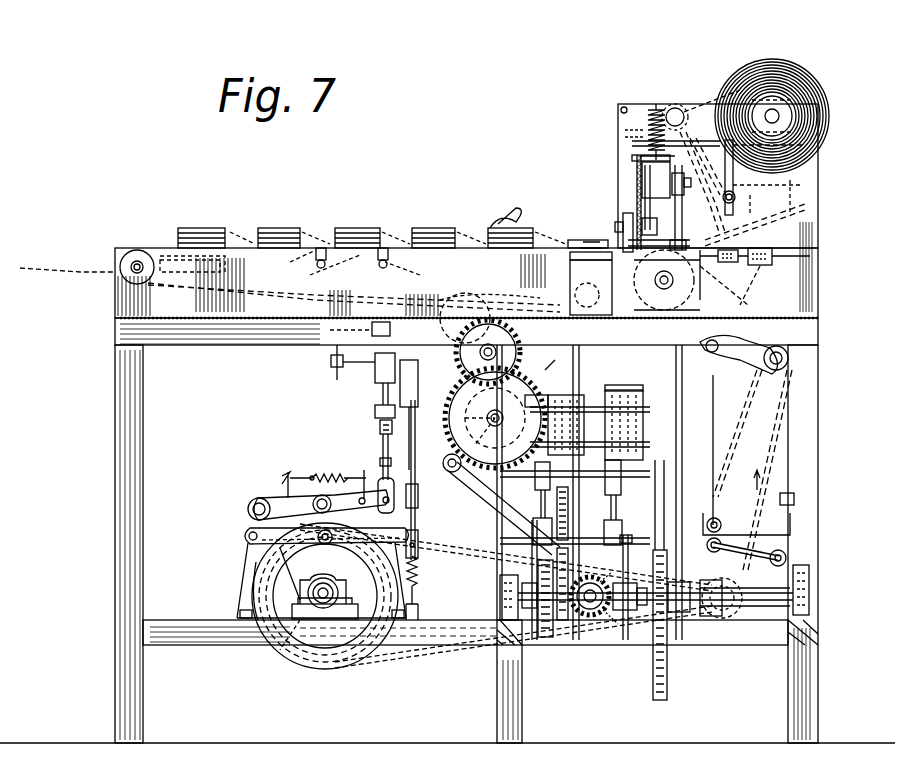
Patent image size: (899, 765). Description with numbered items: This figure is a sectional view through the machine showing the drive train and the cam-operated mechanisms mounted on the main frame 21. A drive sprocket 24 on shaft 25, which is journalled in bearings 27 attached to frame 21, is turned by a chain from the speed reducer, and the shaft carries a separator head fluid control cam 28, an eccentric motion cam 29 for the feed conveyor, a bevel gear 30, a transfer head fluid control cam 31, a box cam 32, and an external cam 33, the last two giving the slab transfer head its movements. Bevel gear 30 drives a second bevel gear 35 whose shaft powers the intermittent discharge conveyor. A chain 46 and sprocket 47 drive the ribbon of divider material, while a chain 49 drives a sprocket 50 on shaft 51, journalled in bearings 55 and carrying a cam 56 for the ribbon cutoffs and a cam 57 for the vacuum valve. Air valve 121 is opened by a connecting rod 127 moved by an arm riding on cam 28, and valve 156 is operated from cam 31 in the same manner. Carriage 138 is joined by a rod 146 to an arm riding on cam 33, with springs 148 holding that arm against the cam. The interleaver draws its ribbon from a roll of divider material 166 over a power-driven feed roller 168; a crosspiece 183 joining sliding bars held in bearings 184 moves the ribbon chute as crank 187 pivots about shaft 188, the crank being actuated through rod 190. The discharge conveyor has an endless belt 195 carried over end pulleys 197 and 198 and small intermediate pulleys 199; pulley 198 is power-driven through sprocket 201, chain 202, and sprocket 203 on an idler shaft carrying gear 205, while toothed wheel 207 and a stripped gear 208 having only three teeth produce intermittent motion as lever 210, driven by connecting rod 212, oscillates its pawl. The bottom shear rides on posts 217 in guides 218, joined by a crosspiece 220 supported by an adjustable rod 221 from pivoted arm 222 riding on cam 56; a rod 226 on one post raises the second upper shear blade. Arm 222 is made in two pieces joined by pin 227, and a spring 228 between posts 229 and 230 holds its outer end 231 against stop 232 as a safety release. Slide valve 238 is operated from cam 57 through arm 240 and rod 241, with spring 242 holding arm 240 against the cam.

The main frame 21 is at (118, 437).
The drive sprocket 24 is at (570, 622).
The shaft 25 is at (765, 610).
The bearings 27 is at (498, 598).
The separator head fluid control cam 28 is at (536, 645).
The eccentric motion cam 29 is at (553, 640).
The bevel gear 30 is at (614, 618).
The transfer head fluid control cam 31 is at (628, 645).
The box cam 32 is at (670, 695).
The external cam 33 is at (690, 645).
The second bevel gear 35 is at (588, 616).
The chain 46 is at (770, 446).
The sprocket 47 is at (732, 612).
The chain 49 is at (398, 660).
The sprocket 50 is at (318, 668).
The shaft 51 is at (275, 645).
The bearings 55 is at (316, 585).
The cam 56 is at (254, 566).
The cam 57 is at (290, 578).
The air valve 121 is at (560, 410).
The connecting rod 127 is at (503, 525).
The carriage 138 is at (640, 168).
The rod 146 is at (682, 248).
The springs 148 is at (648, 115).
The valve 156 is at (608, 400).
The roll of divider material 166 is at (797, 80).
The feed roller 168 is at (677, 104).
The crosspiece 183 is at (737, 185).
The bearings 184 is at (770, 272).
The crank 187 is at (820, 232).
The shaft 188 is at (790, 356).
The rod 190 is at (730, 424).
The endless belt 195 is at (145, 250).
The end pulley 197 is at (112, 270).
The end pulley 198 is at (690, 278).
The intermediate pulleys 199 is at (312, 262).
The sprocket 201 is at (695, 296).
The chain 202 is at (560, 292).
The sprocket 203 is at (467, 310).
The gear 205 is at (472, 368).
The toothed wheel 207 is at (462, 402).
The stripped gear 208 is at (470, 423).
The lever 210 is at (450, 450).
The connecting rod 212 is at (418, 500).
The posts 217 is at (380, 386).
The guides 218 is at (370, 333).
The crosspiece 220 is at (378, 428).
The adjustable rod 221 is at (378, 447).
The pivoted arm 222 is at (248, 510).
The rod 226 is at (332, 357).
The pin 227 is at (366, 508).
The spring 228 is at (310, 477).
The post 229 is at (290, 470).
The post 230 is at (362, 470).
The outer end of arm 231 is at (413, 495).
The stop 232 is at (280, 494).
The slide valve 238 is at (407, 362).
The arm 240 is at (247, 540).
The rod 241 is at (414, 535).
The spring 242 is at (420, 570).